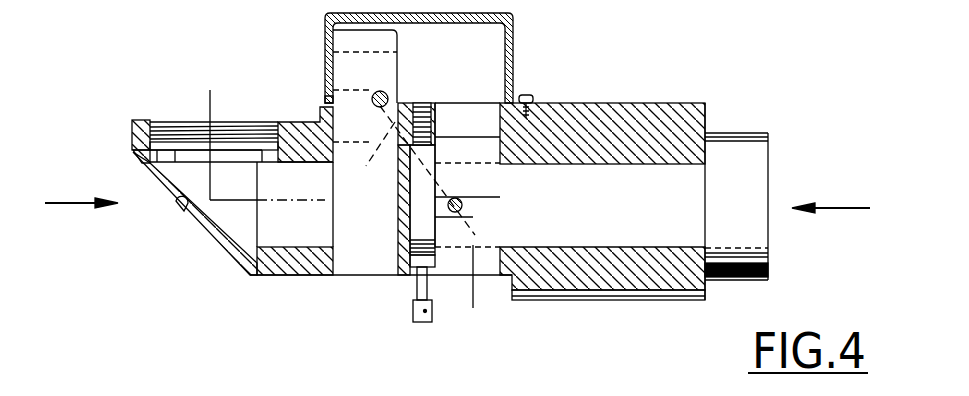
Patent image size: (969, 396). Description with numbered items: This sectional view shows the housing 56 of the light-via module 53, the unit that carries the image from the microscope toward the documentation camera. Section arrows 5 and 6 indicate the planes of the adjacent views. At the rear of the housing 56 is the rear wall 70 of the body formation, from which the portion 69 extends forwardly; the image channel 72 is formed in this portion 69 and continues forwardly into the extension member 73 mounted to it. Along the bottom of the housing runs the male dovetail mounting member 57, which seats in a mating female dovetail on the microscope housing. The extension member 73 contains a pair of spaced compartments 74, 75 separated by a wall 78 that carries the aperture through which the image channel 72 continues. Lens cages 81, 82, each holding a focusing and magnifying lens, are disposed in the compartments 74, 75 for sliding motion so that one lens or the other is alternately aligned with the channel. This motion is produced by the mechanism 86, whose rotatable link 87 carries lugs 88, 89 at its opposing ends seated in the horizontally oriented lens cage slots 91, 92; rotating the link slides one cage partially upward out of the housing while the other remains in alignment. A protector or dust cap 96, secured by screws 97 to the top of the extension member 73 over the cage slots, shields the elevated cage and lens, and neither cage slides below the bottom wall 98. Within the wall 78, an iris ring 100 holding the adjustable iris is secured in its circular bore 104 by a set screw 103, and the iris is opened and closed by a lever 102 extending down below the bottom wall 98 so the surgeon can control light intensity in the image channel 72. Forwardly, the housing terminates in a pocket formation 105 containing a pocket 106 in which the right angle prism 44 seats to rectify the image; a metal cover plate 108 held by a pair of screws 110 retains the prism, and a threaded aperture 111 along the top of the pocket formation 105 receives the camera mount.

The section line 5- 5 is at (64, 203).
The section line 6- 6 is at (842, 208).
The right angle prism 44 is at (240, 237).
The light-via module 53 is at (795, 294).
The housing 56 is at (621, 96).
The male dovetail mounting member 57 is at (552, 292).
The portion of body formation 69 is at (672, 106).
The rear wall 70 is at (708, 112).
The image channel 72 is at (310, 250).
The extension member 73 is at (295, 114).
The compartment 74 is at (502, 277).
The compartment 75 is at (338, 276).
The wall 78 is at (405, 276).
The lens cage 81 is at (461, 273).
The lens cage 82 is at (353, 55).
The mechanism 86 is at (455, 157).
The rotatable link 87 is at (357, 204).
The lug 88 is at (445, 192).
The lug 89 is at (385, 88).
The lens cage slot 91 is at (460, 208).
The lens cage slot 92 is at (322, 101).
The protector or dust cap 96 is at (513, 20).
The screw 97 is at (531, 96).
The bottom wall 98 is at (270, 273).
The iris ring 100 is at (410, 204).
The lever 102 is at (415, 326).
The set screw 103 is at (424, 106).
The circular bore 104 is at (436, 277).
The pocket formation 105 is at (134, 121).
The pocket 106 is at (247, 266).
The metal cover plate 108 is at (218, 238).
The screw 110 is at (185, 209).
The threaded aperture 111 is at (188, 123).